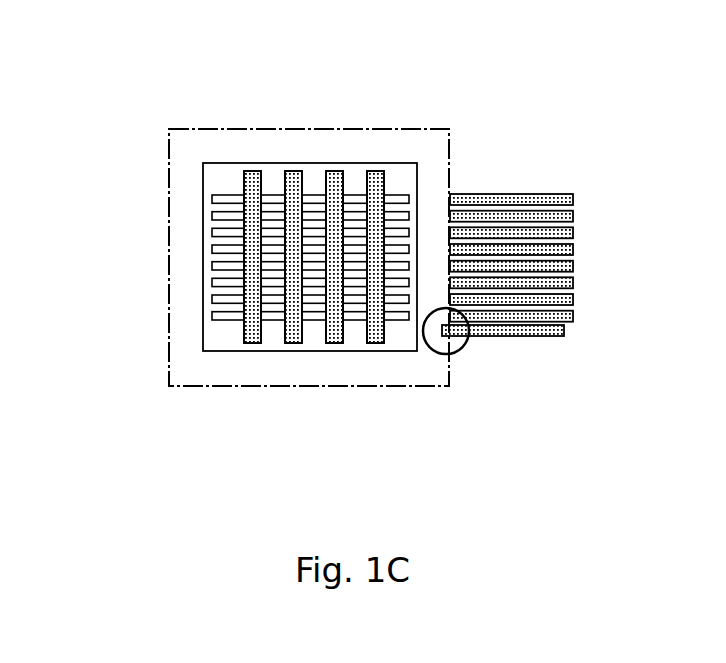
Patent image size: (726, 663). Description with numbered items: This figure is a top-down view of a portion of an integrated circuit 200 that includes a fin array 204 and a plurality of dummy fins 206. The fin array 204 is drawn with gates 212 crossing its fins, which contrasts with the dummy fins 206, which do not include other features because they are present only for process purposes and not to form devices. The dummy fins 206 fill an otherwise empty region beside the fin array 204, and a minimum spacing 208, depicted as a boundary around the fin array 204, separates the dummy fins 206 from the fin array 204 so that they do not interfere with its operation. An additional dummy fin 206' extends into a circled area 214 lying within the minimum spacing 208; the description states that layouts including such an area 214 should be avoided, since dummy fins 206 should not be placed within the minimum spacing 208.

The integrated circuit 200 is at (105, 185).
The fin array 204 is at (307, 259).
The dummy fins 206 is at (567, 331).
The additional contact finger 206' is at (533, 401).
The minimum spacing 208 is at (190, 374).
The gates 212 is at (334, 333).
The area 214 is at (452, 342).